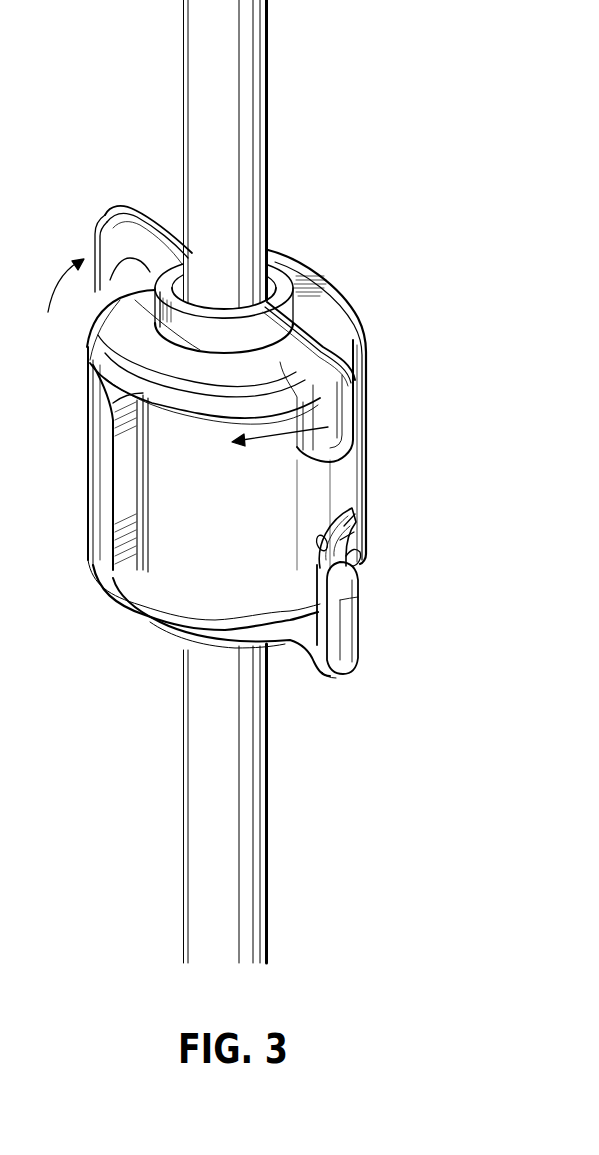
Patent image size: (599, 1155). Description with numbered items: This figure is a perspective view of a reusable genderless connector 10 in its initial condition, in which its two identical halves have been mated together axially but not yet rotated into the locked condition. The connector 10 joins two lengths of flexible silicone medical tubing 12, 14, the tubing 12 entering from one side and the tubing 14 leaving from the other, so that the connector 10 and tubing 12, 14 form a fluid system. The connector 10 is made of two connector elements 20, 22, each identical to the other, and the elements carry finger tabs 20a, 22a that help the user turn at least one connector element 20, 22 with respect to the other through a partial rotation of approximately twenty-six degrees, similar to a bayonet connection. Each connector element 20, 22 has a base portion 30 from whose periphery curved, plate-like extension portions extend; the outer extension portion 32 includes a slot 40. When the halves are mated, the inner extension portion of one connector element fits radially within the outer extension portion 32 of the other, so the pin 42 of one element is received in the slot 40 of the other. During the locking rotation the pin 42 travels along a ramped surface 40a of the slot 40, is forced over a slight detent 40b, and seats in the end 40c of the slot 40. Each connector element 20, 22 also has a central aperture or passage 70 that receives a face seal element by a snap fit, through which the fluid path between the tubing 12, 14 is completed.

The genderless connector 10 is at (130, 192).
The flexible medical tubing 12 is at (268, 48).
The flexible medical tubing 14 is at (268, 878).
The connector element 20 is at (241, 448).
The finger tab 20a is at (358, 668).
The connector element 22 is at (366, 356).
The finger tab 22a is at (108, 222).
The base portion 30 is at (333, 284).
The outer extension portion 32 is at (88, 487).
The slot 40 is at (343, 601).
The ramped surface 40a is at (363, 560).
The detent 40b is at (357, 533).
The end of the slot 40c is at (357, 518).
The pin 42 is at (317, 545).
The central aperture or passage 70 is at (270, 268).